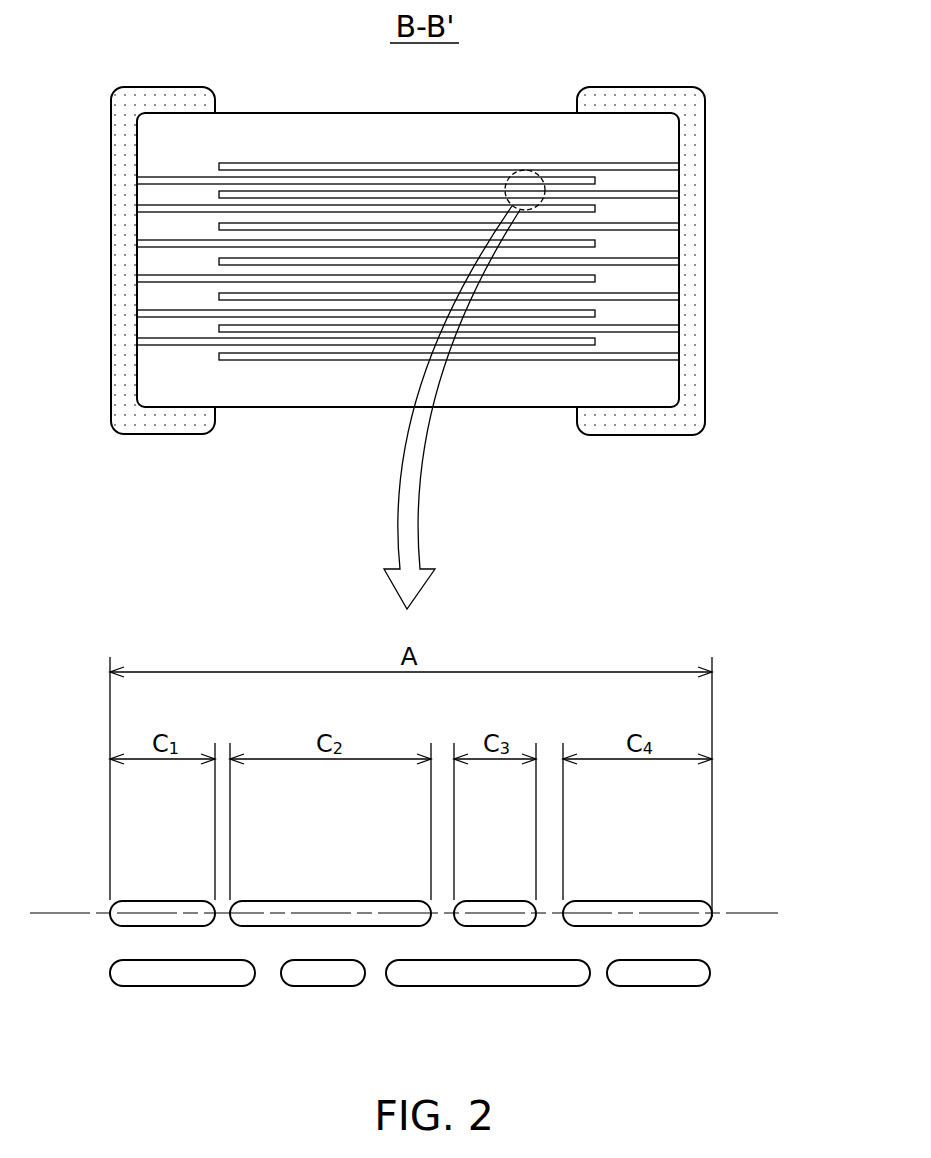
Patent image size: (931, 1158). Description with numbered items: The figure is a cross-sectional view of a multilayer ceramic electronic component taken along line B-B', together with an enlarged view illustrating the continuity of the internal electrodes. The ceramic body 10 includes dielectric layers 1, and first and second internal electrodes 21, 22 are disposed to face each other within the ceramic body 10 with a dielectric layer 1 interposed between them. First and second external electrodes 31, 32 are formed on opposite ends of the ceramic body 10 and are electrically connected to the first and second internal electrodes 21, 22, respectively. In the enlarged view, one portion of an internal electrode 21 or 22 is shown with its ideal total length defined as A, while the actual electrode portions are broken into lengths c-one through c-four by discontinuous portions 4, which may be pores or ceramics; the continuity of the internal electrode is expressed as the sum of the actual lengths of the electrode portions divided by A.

The dielectric layer 1 is at (668, 207).
The discontinuous portion 4 is at (547, 919).
The ceramic body 10 is at (288, 397).
The first internal electrode 21 is at (627, 193).
The second internal electrode 22 is at (595, 208).
The first external electrode 31 is at (147, 426).
The second external electrode 32 is at (645, 423).